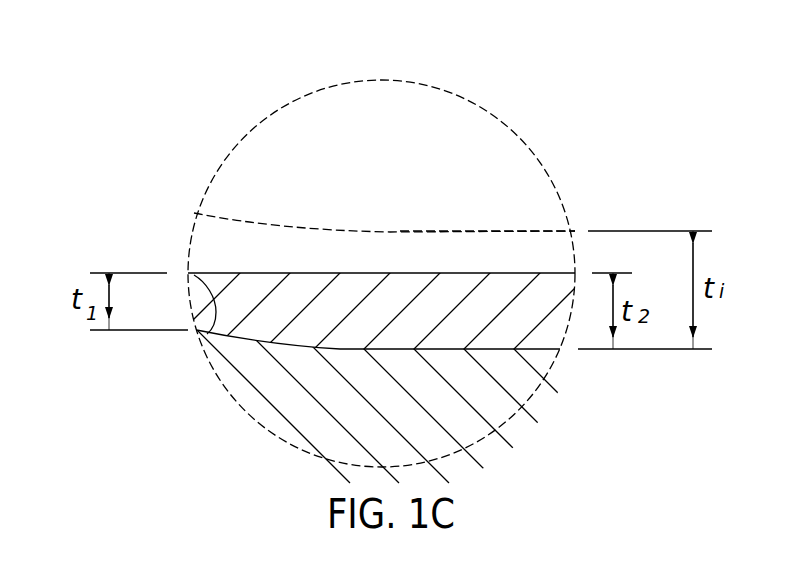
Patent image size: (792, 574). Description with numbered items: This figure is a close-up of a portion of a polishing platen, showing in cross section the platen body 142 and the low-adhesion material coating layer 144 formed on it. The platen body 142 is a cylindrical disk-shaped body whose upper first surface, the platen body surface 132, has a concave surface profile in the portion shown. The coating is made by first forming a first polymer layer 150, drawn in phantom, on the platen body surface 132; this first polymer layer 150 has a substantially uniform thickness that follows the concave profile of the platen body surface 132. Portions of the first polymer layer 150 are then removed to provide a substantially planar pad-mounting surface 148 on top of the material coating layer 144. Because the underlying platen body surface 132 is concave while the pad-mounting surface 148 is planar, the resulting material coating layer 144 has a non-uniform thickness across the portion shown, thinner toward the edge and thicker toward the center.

The platen body surface 132 is at (213, 305).
The platen body 142 is at (393, 403).
The material coating layer 144 is at (443, 316).
The pad-mounting surface 148 is at (310, 273).
The first polymer layer 150 is at (490, 231).